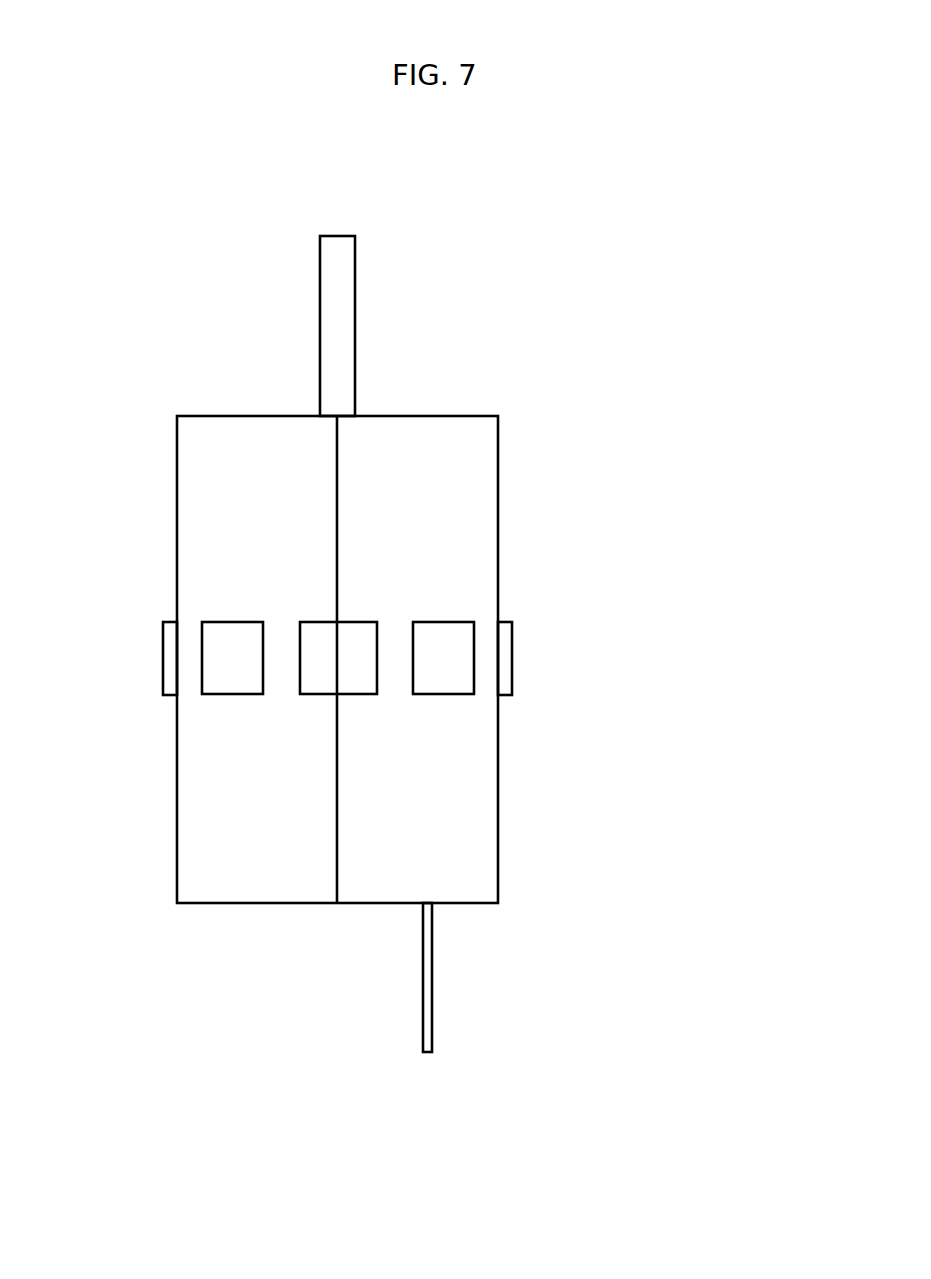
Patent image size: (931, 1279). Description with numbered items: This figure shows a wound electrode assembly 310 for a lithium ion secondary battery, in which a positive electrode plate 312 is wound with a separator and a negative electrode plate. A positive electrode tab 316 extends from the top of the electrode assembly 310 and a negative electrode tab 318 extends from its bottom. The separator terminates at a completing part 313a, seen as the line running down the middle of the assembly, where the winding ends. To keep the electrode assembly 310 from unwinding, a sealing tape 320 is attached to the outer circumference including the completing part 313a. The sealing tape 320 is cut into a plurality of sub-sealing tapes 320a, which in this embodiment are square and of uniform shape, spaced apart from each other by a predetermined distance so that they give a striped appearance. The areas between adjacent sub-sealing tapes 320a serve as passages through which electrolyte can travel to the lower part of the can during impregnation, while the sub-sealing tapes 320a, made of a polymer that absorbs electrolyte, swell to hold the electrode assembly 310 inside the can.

The electrode assembly 310 is at (202, 325).
The positive electrode plate 312 is at (400, 440).
The completing part 313a is at (337, 878).
The positive electrode tab 316 is at (349, 285).
The negative electrode tab 318 is at (432, 958).
The sealing tape 320 is at (725, 518).
The sub-sealing tapes 320a is at (348, 653).